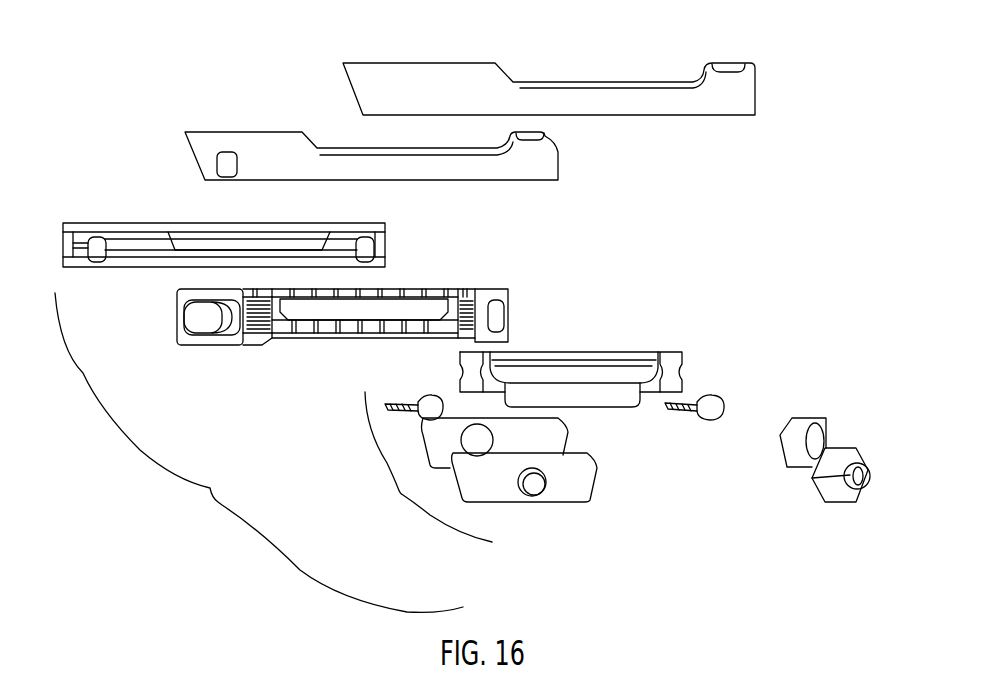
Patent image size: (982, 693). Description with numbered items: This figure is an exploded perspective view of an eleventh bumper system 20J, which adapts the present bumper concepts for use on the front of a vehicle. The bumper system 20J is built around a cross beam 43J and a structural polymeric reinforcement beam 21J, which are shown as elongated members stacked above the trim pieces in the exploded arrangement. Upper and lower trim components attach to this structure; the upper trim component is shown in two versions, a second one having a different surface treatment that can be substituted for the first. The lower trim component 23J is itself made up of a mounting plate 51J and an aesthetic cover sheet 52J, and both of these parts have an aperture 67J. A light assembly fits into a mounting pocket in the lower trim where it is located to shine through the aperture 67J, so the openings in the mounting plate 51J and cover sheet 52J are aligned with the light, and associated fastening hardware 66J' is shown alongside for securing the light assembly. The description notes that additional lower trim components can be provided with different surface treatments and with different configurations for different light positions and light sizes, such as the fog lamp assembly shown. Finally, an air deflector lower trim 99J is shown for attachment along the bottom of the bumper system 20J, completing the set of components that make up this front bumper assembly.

The bumper system 20J is at (259, 452).
The structural polymeric reinforcement beam 21J is at (497, 292).
The lower trim component 23J is at (427, 467).
The cross beam 43J is at (122, 223).
The mounting plate 51J is at (567, 427).
The aesthetic cover sheet 52J is at (597, 493).
The hex nut fastener 66J' is at (806, 431).
The aperture 67J is at (532, 492).
The air deflector lower trim 99J is at (630, 352).